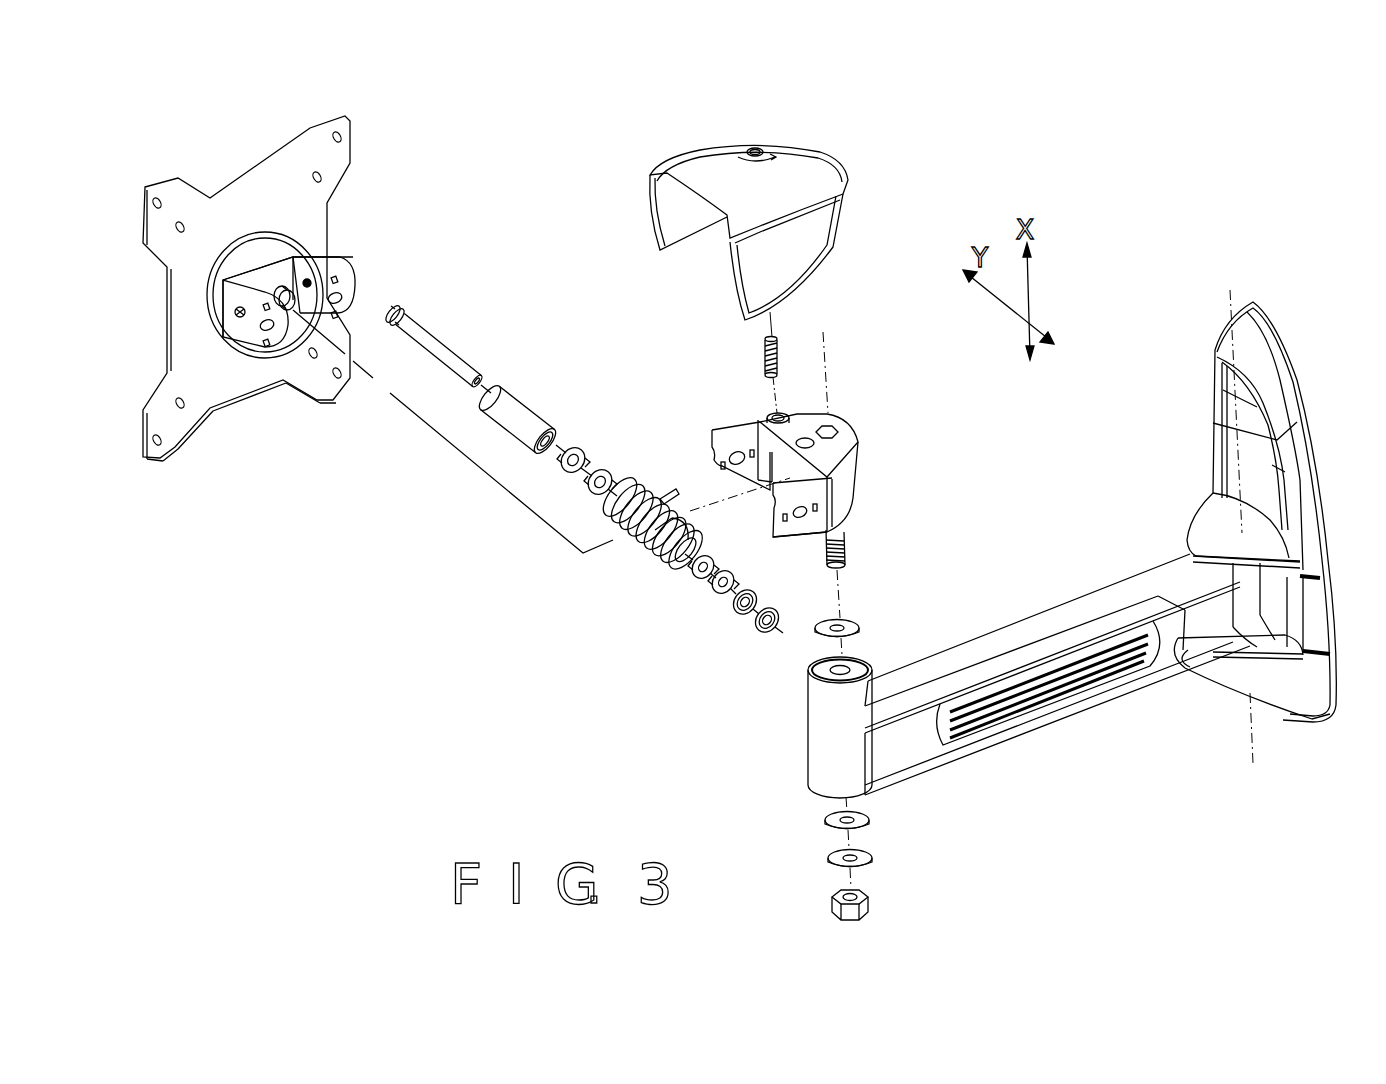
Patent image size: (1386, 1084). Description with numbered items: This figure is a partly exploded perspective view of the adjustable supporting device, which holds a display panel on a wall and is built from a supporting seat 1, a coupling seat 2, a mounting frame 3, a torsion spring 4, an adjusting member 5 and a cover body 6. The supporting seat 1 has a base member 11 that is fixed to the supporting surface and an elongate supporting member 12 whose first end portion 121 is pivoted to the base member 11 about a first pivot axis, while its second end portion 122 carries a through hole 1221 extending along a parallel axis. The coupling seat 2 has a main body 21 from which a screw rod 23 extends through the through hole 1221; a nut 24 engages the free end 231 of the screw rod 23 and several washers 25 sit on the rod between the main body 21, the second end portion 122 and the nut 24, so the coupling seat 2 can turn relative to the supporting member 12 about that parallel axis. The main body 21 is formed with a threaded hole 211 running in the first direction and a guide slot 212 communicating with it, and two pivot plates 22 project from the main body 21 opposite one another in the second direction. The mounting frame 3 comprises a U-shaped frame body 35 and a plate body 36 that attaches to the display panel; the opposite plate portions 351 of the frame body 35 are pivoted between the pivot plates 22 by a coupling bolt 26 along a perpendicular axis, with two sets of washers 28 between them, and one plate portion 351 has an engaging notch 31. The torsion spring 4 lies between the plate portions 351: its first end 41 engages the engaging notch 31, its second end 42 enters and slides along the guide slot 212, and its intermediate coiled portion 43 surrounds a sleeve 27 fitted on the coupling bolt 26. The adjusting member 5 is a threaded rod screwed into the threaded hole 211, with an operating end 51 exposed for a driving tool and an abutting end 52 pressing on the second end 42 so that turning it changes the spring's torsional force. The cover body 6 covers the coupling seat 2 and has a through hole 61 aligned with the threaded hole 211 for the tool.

The supporting seat 1 is at (1052, 517).
The base member 11 is at (1230, 470).
The supporting member 12 is at (1058, 617).
The first end portion 121 is at (1253, 623).
The second end portion 122 is at (827, 757).
The through hole 1221 is at (841, 668).
The coupling seat 2 is at (880, 418).
The main body 21 is at (832, 452).
The threaded hole 211 is at (785, 412).
The pivot plates 22 is at (770, 545).
The guide slot 212 is at (772, 491).
The screw rod 23 is at (842, 527).
The free end 231 is at (845, 563).
The nut 24 is at (867, 900).
The washers 25 is at (827, 633).
The coupling bolt 26 is at (447, 357).
The sleeve 27 is at (513, 417).
The washers 28 is at (593, 495).
The mounting frame 3 is at (205, 181).
The engaging notch 31 is at (237, 337).
The U-shaped frame body 35 is at (277, 267).
The plate portions 351 is at (280, 313).
The plate body 36 is at (249, 215).
The torsion spring 4 is at (620, 559).
The first end 41 is at (650, 557).
The second end 42 is at (647, 496).
The intermediate coiled portion 43 is at (637, 547).
The adjusting member 5 is at (756, 362).
The operating end 51 is at (770, 338).
The abutting end 52 is at (770, 375).
The cover body 6 is at (830, 147).
The through hole 61 is at (753, 150).